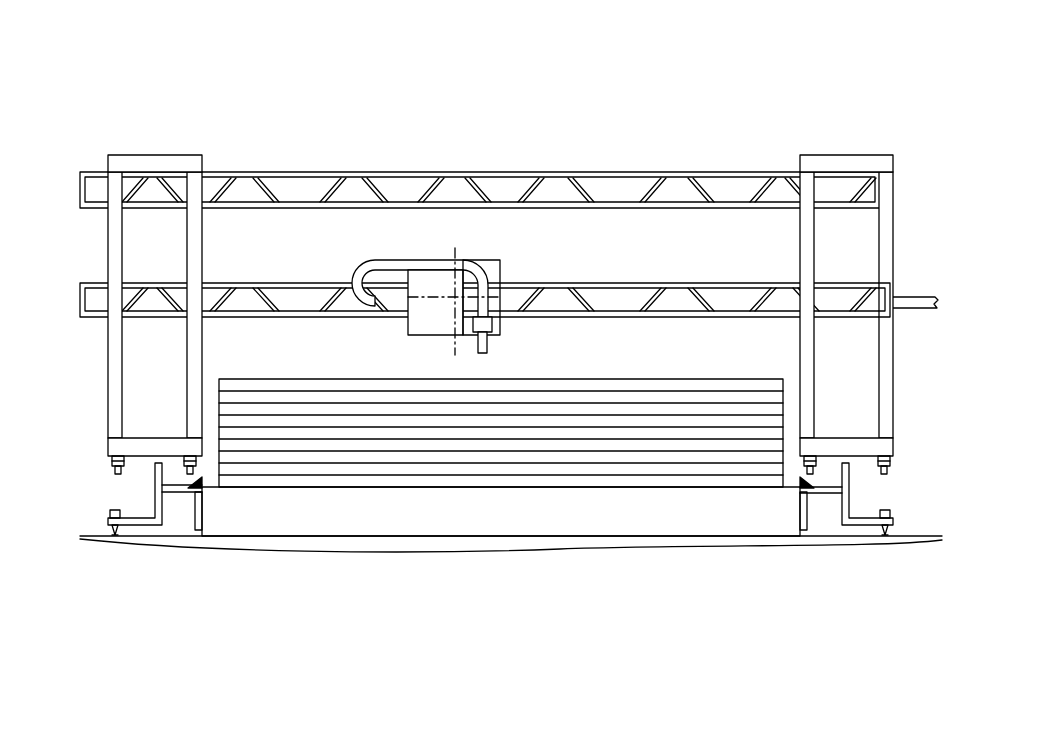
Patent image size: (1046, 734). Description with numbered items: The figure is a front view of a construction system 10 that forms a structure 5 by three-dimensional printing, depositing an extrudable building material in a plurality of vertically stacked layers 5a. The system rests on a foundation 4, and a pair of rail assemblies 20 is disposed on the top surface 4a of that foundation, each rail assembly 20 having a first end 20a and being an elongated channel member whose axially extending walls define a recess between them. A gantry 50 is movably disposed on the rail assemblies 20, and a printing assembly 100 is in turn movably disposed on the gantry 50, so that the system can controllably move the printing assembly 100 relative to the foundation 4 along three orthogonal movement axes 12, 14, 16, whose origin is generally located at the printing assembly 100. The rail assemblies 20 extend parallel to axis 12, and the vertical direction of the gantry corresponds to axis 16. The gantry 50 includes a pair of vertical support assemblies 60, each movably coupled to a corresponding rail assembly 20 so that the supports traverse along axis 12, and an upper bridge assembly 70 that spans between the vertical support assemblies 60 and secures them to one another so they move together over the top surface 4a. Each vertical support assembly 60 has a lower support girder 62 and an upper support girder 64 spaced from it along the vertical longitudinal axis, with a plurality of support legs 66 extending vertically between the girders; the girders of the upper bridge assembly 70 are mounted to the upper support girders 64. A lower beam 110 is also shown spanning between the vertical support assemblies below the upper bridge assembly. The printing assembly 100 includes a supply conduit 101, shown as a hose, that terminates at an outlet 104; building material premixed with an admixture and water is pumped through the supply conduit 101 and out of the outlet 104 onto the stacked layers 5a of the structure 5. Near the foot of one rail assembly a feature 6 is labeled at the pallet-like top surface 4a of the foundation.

The construction system 10 is at (186, 78).
The foundation 4 is at (371, 541).
The top surface 4a is at (414, 481).
The structure 5 is at (254, 377).
The vertically stacked layers 5a is at (218, 391).
The pallet slot 6 is at (806, 526).
The movement axis 12 is at (453, 321).
The movement axis 14 is at (505, 290).
The movement axis 16 is at (461, 253).
The rail assembly 20 is at (147, 495).
The first end 20a is at (190, 516).
The gantry 50 is at (340, 158).
The vertical support assembly 60 is at (106, 353).
The lower support girder 62 is at (105, 455).
The upper support girder 64 is at (116, 151).
The support legs 66 is at (108, 250).
The upper bridge assembly 70 is at (699, 160).
The printing assembly 100 is at (403, 341).
The supply conduit 101 is at (368, 268).
The outlet 104 is at (493, 351).
The lower beam 110 is at (701, 324).